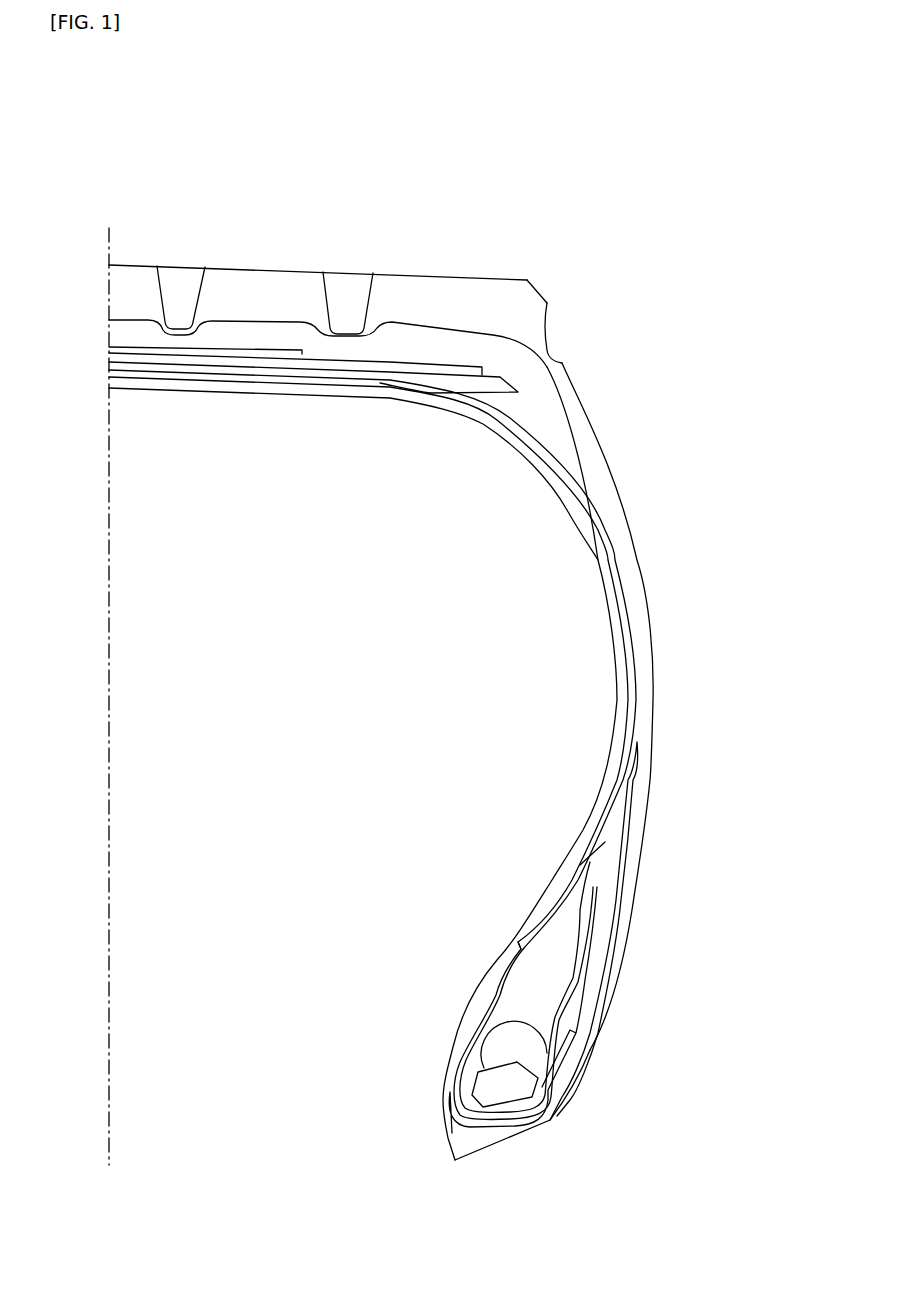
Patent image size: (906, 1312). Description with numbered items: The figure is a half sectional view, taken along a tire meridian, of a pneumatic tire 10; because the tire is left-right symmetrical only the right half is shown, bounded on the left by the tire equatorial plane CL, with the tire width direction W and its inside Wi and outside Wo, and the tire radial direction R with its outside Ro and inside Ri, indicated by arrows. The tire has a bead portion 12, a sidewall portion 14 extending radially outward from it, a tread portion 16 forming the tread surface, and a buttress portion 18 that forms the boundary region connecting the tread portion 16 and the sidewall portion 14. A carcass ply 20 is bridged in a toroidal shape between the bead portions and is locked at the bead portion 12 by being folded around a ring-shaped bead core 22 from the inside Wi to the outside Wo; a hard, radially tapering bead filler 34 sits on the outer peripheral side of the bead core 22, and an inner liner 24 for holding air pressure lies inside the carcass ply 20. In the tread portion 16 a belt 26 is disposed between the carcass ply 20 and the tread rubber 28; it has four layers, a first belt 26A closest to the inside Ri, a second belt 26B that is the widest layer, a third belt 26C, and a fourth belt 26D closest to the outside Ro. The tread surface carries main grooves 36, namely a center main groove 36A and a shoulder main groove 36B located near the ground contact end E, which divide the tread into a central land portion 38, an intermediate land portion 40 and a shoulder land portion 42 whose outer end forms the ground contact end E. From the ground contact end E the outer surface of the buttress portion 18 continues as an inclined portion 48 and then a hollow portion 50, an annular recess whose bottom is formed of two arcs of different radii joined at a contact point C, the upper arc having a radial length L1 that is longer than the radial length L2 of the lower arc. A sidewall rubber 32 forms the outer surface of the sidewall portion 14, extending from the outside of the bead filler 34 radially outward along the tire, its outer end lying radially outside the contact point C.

The pneumatic tire 10 is at (124, 88).
The bead portion 12 is at (592, 1099).
The sidewall portion 14 is at (665, 737).
The tread portion 16 is at (245, 238).
The buttress portion 18 is at (601, 316).
The carcass ply 20 is at (590, 862).
The bead core 22 is at (500, 1086).
The inner liner 24 is at (523, 930).
The belt 26 is at (313, 445).
The first belt 26A is at (420, 372).
The second belt 26B is at (437, 443).
The third belt 26C is at (458, 374).
The fourth belt 26D is at (286, 354).
The tread rubber 28 is at (119, 297).
The sidewall rubber 32 is at (635, 830).
The bead filler 34 is at (538, 972).
The main groove 36 is at (260, 251).
The center main groove 36A is at (175, 288).
The shoulder main groove 36B is at (338, 290).
The central land portion 38 is at (118, 262).
The intermediate land portion 40 is at (278, 265).
The shoulder land portion 42 is at (447, 272).
The inclined portion 48 is at (545, 300).
The hollow portion 50 is at (604, 329).
The tire equatorial plane CL is at (110, 742).
The ground contact end E is at (527, 278).
The contact point C is at (548, 342).
The length of upper arc portion L1 is at (548, 304).
The length of lower arc portion L2 is at (565, 363).
The tire width direction W is at (296, 840).
The inside in tire width direction Wi is at (240, 860).
The outside in tire width direction Wo is at (296, 860).
The tire radial direction R is at (356, 860).
The outside in tire radial direction Ro is at (337, 860).
The inside in tire radial direction Ri is at (337, 911).